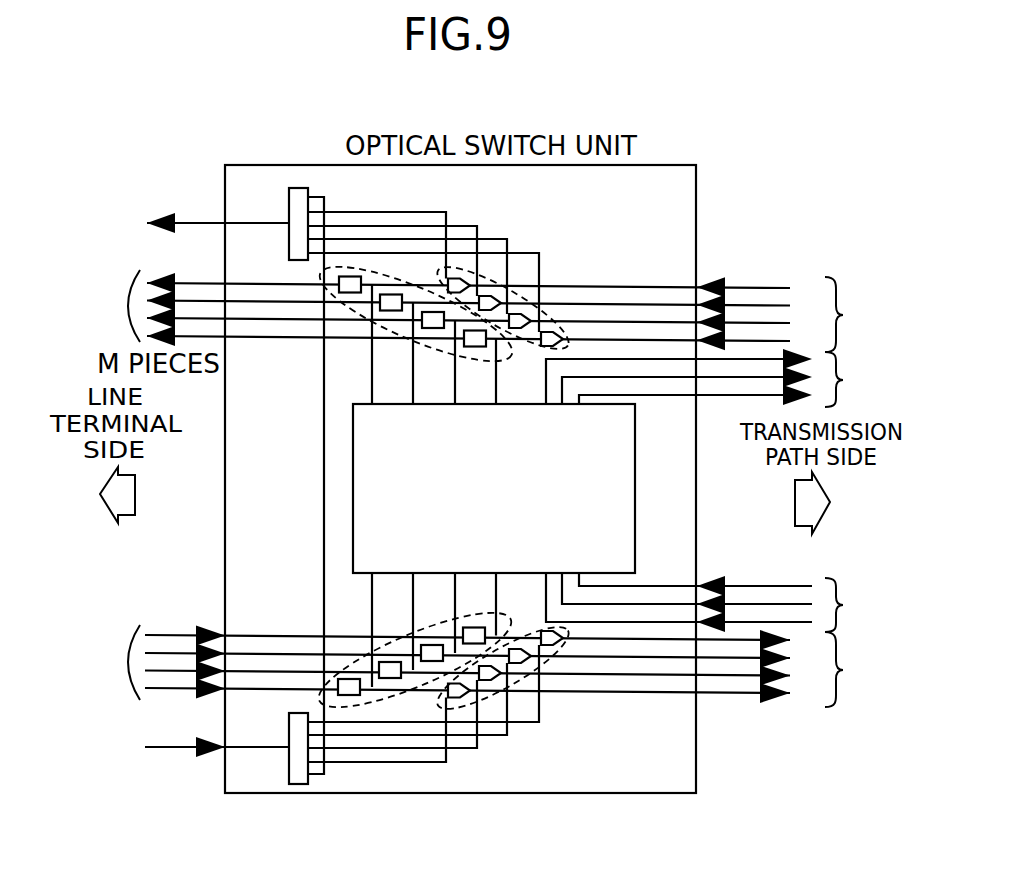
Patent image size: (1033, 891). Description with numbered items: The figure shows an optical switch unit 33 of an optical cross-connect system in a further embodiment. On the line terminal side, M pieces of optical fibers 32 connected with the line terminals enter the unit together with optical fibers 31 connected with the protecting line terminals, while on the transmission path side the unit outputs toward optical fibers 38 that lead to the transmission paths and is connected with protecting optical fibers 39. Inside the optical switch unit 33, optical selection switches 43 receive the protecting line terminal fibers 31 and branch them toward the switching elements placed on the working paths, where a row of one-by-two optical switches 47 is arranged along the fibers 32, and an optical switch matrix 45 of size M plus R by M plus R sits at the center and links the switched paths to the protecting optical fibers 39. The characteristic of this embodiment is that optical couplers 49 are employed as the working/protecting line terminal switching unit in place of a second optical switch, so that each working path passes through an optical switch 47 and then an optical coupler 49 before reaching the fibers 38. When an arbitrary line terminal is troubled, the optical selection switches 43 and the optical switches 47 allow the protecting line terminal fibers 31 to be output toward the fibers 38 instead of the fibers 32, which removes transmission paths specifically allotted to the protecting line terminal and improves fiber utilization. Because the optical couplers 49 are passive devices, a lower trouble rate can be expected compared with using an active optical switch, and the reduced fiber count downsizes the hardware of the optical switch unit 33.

The optical fibers connected with the protecting line terminals 31 is at (200, 219).
The optical fibers connected with the line terminal 32 is at (125, 312).
The optical switch unit 33 is at (670, 165).
The optical fibers which output towards the transmission paths 38 is at (843, 315).
The protecting optical fibers 39 is at (843, 380).
The optical selection switches 43 is at (298, 188).
The optical switch matrix 45 is at (353, 490).
The 1×2 optical switches 47 is at (352, 270).
The optical couplers 49 is at (486, 276).